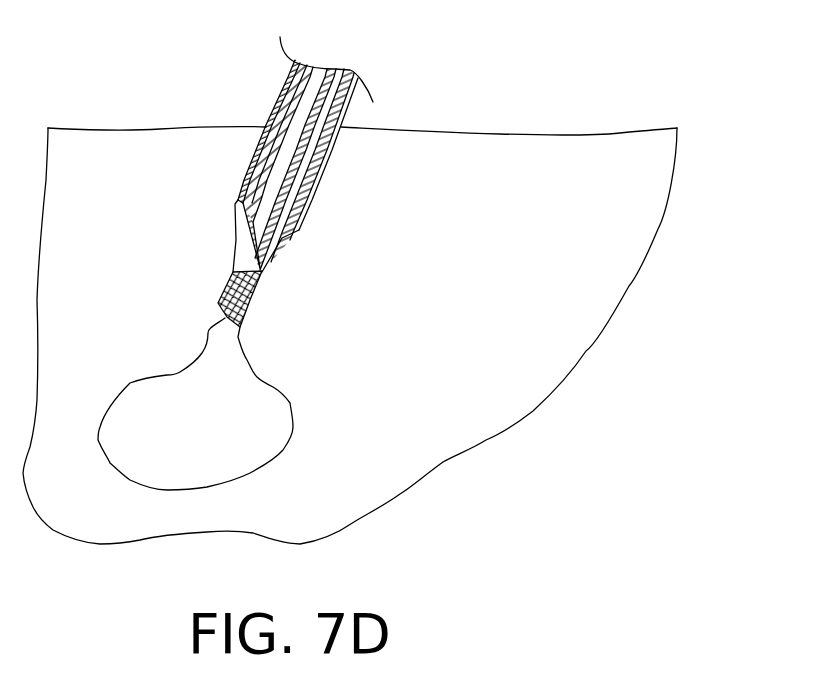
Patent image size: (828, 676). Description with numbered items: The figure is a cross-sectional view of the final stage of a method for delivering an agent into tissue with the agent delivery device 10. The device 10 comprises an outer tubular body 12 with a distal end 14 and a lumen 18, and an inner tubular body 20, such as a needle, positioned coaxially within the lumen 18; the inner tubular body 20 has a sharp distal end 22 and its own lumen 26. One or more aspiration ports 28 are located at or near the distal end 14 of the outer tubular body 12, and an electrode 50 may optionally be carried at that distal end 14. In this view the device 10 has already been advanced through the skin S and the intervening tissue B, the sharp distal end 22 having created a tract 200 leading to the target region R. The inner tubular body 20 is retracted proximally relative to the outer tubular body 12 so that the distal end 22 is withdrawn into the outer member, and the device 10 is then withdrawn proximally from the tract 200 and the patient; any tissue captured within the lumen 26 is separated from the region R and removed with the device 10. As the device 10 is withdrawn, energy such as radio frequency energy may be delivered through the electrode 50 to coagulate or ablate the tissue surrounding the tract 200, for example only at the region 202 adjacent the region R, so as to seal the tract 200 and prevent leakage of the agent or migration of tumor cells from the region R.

The agent delivery device 10 is at (382, 104).
The outer tubular body 12 is at (293, 76).
The distal end of outer tubular body 14 is at (318, 172).
The lumen of outer tubular body 18 is at (348, 70).
The inner tubular body 20 is at (316, 134).
The distal end of inner tubular body 22 is at (266, 257).
The lumen of inner tubular body 26 is at (302, 128).
The aspiration port 28 is at (266, 131).
The electrode 50 is at (242, 219).
The tract 200 is at (300, 230).
The treated tissue region 202 is at (247, 306).
The skin S is at (600, 133).
The intervening tissue B is at (585, 279).
The target region R is at (195, 404).